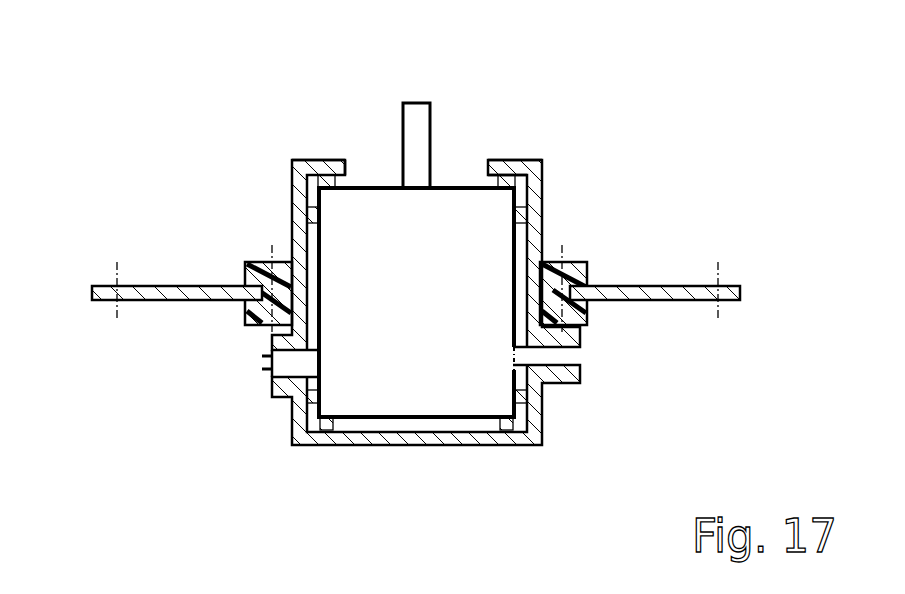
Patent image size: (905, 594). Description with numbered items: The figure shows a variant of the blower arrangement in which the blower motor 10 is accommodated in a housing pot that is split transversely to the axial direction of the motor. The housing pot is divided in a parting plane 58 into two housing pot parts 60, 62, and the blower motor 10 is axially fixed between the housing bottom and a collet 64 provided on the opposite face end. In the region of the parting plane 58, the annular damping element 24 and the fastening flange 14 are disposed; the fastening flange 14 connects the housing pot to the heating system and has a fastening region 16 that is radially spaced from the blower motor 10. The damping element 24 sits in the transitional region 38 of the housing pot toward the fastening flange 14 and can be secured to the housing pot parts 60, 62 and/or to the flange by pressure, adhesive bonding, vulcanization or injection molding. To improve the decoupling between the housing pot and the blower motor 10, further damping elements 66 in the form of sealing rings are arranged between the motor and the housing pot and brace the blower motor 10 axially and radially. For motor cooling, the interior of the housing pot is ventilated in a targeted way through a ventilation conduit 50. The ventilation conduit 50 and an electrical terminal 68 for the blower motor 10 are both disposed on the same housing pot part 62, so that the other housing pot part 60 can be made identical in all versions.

The blower motor 10 is at (420, 387).
The fastening flange 14 is at (683, 285).
The fastening region 16 is at (115, 273).
The annular damping element 24 is at (241, 258).
The transitional region 38 is at (605, 238).
The ventilation conduit 50 is at (598, 364).
The parting plane 58 is at (530, 283).
The housing pot part 60 is at (296, 218).
The housing pot part 62 is at (508, 435).
The collet 64 is at (325, 167).
The further damping elements 66 is at (326, 423).
The electrical terminal 68 is at (253, 372).